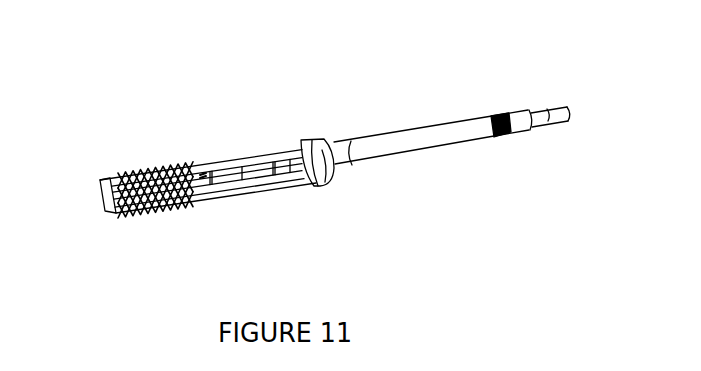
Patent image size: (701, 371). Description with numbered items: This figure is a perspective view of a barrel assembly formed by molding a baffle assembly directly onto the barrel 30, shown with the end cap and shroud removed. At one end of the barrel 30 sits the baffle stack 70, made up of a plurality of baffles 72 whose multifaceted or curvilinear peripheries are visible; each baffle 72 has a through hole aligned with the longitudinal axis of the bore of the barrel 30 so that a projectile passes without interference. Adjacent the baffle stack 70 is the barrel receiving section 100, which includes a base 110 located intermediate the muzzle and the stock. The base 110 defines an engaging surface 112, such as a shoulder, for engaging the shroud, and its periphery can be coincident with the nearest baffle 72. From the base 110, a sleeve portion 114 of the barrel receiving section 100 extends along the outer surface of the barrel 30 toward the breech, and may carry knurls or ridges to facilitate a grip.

The barrel receiving section 100 is at (335, 165).
The baffle stack 70 is at (135, 157).
The baffle 72 is at (180, 203).
The base 110 is at (308, 138).
The engaging surface 112 is at (322, 188).
The sleeve portion 114 is at (407, 146).
The barrel 30 is at (519, 123).